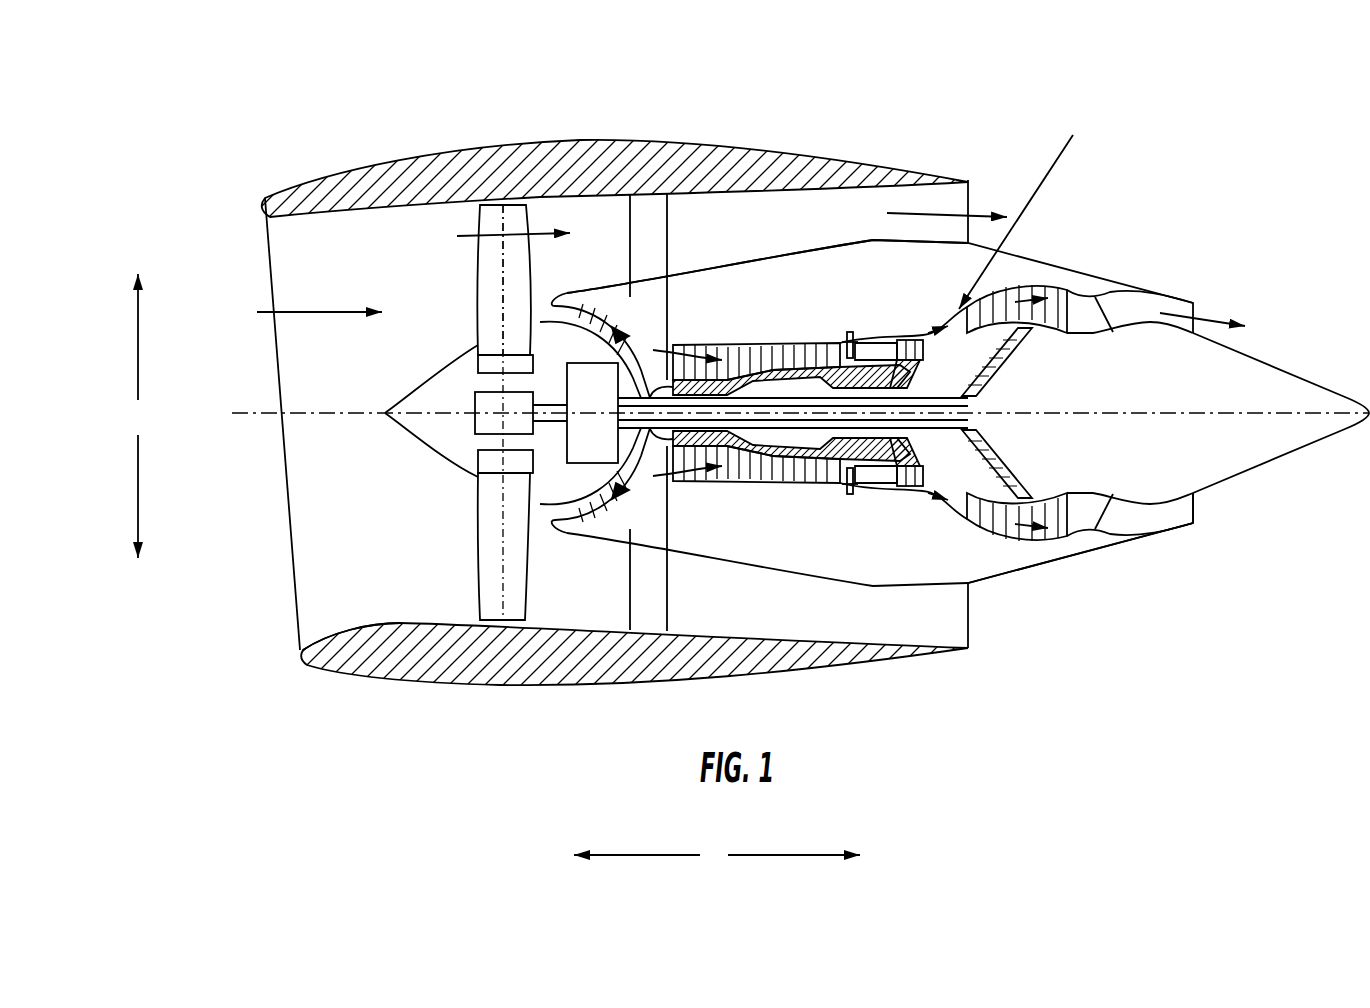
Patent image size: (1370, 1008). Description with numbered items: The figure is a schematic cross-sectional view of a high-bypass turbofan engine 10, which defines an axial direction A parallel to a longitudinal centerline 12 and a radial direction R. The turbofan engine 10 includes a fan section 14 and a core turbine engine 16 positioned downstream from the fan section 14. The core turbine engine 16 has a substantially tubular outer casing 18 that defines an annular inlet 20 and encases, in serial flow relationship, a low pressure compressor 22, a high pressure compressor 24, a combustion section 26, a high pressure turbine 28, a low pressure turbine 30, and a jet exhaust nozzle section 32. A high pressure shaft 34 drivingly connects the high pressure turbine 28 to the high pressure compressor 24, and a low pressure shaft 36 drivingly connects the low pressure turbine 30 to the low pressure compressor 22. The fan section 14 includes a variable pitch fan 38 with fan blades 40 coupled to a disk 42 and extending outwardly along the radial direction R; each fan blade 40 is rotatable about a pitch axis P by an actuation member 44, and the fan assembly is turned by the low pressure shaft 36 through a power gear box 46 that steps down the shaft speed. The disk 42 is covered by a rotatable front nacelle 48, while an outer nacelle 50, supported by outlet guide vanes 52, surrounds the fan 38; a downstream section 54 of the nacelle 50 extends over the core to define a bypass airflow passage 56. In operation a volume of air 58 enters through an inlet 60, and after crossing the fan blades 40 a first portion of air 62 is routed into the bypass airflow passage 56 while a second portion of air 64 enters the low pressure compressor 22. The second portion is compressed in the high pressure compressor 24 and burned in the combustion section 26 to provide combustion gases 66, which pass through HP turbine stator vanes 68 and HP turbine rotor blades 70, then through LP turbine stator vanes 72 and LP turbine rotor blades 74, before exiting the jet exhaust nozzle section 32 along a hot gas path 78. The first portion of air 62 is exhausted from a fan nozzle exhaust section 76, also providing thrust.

The turbofan engine 10 is at (1114, 149).
The longitudinal centerline 12 is at (1136, 410).
The fan section 14 is at (518, 107).
The core turbine engine 16 is at (841, 304).
The outer casing 18 is at (828, 580).
The annular inlet 20 is at (569, 519).
The low pressure compressor 22 is at (630, 470).
The high pressure compressor 24 is at (698, 466).
The combustion section 26 is at (870, 468).
The high pressure turbine 28 is at (1000, 468).
The low pressure turbine 30 is at (1052, 542).
The jet exhaust nozzle section 32 is at (1113, 532).
The high pressure shaft 34 is at (902, 372).
The low pressure shaft 36 is at (1003, 373).
The variable pitch fan 38 is at (444, 466).
The fan blades 40 is at (477, 562).
The disk 42 is at (497, 367).
The actuation member 44 is at (477, 395).
The power gear box 46 is at (633, 340).
The front nacelle 48 is at (403, 432).
The outer nacelle 50 is at (520, 690).
The outlet guide vanes 52 is at (670, 222).
The downstream section of the nacelle 54 is at (900, 157).
The bypass airflow passage 56 is at (793, 239).
The volume of air 58 is at (318, 310).
The inlet 60 is at (298, 627).
The first portion of air 62 is at (475, 236).
The second portion of air 64 is at (563, 293).
The combustion gases 66 is at (913, 340).
The HP turbine stator vanes 68 is at (887, 487).
The HP turbine rotor blades 70 is at (978, 443).
The LP turbine stator vanes 72 is at (977, 528).
The LP turbine rotor blades 74 is at (987, 540).
The fan nozzle exhaust section 76 is at (957, 200).
The hot gas path 78 is at (1025, 206).
The pitch axis P is at (503, 216).
The radial direction R is at (137, 416).
The axial direction A is at (717, 855).